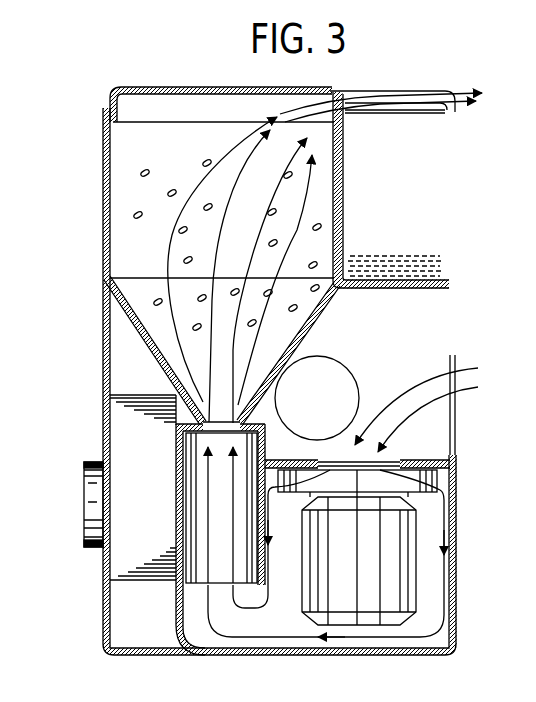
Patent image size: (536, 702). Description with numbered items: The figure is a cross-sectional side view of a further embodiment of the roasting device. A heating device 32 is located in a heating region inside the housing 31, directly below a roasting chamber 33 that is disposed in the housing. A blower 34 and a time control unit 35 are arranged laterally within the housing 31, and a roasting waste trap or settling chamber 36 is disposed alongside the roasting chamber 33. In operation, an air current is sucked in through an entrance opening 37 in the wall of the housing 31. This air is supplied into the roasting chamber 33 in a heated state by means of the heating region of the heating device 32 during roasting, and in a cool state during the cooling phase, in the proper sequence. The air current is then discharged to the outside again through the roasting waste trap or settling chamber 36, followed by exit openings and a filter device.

The housing 31 is at (453, 598).
The heating device 32 is at (200, 512).
The roasting chamber 33 is at (115, 221).
The blower 34 is at (400, 540).
The time control unit 35 is at (92, 483).
The roasting waste trap or settling chamber 36 is at (432, 211).
The entrance opening 37 is at (453, 430).